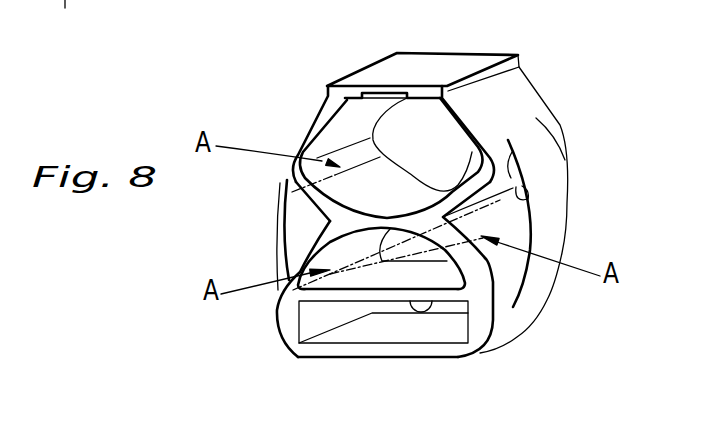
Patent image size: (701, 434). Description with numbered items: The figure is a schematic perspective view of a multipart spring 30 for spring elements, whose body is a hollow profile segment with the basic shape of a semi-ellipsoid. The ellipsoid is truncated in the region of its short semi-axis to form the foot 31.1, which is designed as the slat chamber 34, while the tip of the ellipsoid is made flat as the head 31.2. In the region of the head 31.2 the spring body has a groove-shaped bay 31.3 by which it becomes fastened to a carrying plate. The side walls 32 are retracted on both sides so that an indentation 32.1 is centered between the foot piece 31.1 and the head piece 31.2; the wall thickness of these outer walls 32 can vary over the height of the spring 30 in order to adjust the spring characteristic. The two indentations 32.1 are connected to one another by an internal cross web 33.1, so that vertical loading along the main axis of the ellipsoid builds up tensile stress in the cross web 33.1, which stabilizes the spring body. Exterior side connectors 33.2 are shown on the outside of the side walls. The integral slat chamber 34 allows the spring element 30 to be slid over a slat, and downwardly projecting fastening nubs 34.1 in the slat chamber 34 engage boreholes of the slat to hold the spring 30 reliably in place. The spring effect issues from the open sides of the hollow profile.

The multipart spring 30 is at (290, 106).
The foot 31.1 is at (375, 352).
The head 31.2 is at (432, 67).
The groove-shaped bay 31.3 is at (390, 114).
The side walls 32 is at (302, 130).
The indentation 32.1 is at (308, 219).
The internal cross web 33.1 is at (408, 200).
The curved lip 33.2 is at (277, 236).
The slat chamber 34 is at (299, 343).
The fastening nubs 34.1 is at (432, 313).